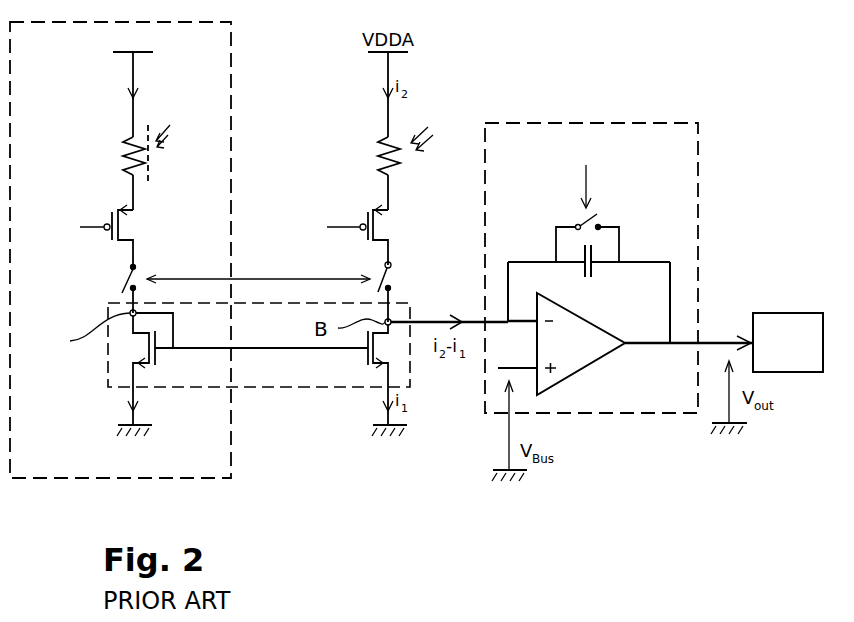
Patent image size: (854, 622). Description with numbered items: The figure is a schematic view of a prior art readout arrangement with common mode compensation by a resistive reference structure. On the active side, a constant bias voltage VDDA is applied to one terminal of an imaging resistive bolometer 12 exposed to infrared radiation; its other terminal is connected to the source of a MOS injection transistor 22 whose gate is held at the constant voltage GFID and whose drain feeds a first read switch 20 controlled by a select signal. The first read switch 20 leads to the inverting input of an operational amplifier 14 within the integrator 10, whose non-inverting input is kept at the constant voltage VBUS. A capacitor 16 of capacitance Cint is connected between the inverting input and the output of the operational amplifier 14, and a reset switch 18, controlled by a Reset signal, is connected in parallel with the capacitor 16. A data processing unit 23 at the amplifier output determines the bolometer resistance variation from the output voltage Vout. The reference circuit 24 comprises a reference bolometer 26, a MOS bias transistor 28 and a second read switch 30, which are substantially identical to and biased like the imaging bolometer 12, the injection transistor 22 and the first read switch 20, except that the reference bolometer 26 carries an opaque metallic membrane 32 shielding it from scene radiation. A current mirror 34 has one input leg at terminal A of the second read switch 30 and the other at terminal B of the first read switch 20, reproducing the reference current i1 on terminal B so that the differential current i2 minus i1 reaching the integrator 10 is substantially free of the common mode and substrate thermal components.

The integrator 10 is at (698, 165).
The resistive bolometer 12 is at (376, 153).
The operational amplifier 14 is at (587, 369).
The capacitor 16 is at (595, 272).
The reset switch 18 is at (603, 218).
The first read switch 20 is at (397, 277).
The MOS injection transistor 22 is at (384, 224).
The data processing unit 23 is at (788, 342).
The reference circuit 24 is at (210, 263).
The reference bolometer 26 is at (123, 153).
The MOS bias transistor 28 is at (139, 228).
The second read switch 30 is at (131, 272).
The opaque metallic membrane 32 is at (149, 163).
The current mirror 34 is at (320, 388).